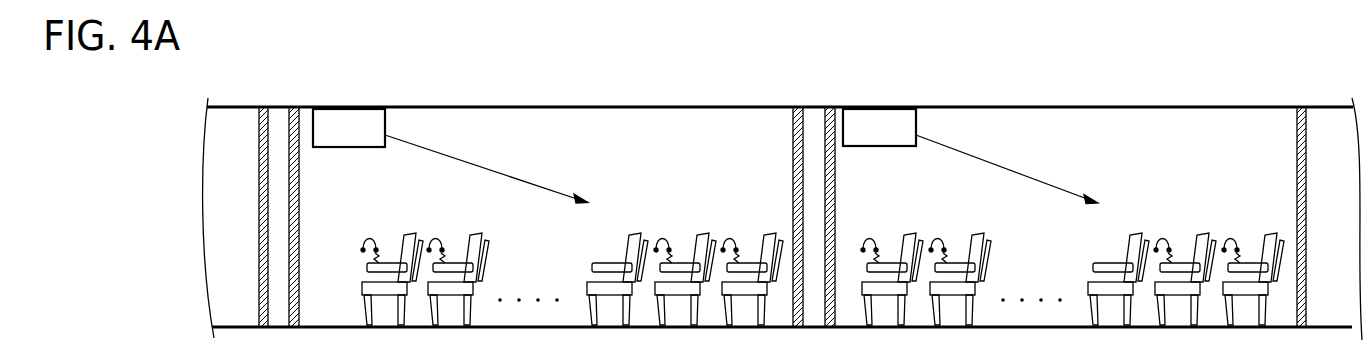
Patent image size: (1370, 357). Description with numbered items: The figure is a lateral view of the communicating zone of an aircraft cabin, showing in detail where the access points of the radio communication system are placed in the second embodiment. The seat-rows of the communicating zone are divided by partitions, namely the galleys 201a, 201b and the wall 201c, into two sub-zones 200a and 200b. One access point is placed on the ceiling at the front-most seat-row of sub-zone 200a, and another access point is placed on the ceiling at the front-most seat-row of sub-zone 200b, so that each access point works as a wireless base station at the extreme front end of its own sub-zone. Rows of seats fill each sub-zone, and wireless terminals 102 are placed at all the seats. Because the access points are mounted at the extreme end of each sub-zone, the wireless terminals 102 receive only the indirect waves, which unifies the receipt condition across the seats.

The wireless terminal 102 is at (480, 248).
The sub-zone 200a is at (543, 120).
The sub-zone 200b is at (1086, 122).
The galley 201a is at (299, 208).
The galley 201b is at (793, 188).
The wall 201c is at (1297, 190).